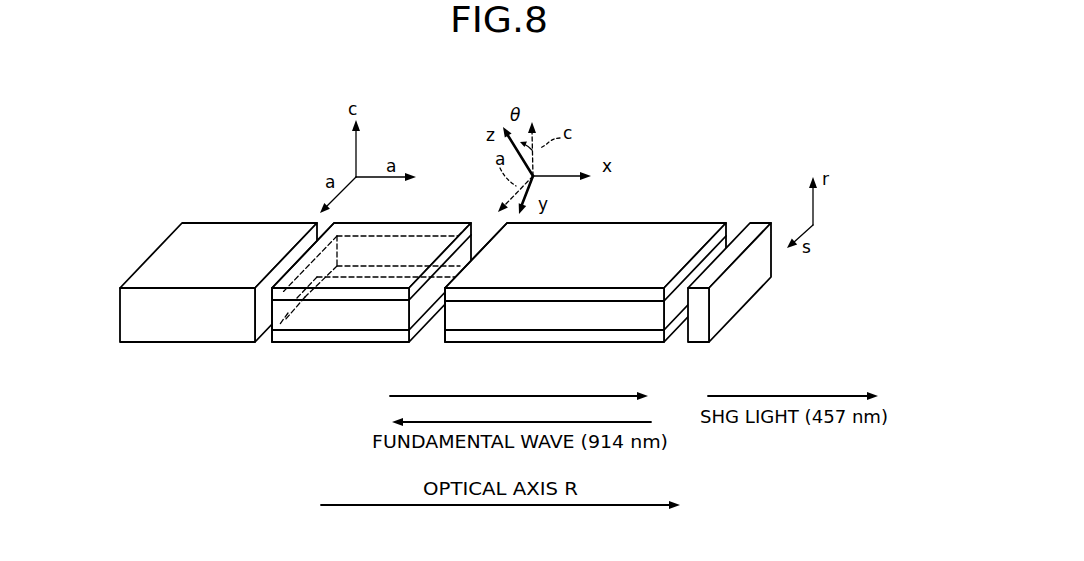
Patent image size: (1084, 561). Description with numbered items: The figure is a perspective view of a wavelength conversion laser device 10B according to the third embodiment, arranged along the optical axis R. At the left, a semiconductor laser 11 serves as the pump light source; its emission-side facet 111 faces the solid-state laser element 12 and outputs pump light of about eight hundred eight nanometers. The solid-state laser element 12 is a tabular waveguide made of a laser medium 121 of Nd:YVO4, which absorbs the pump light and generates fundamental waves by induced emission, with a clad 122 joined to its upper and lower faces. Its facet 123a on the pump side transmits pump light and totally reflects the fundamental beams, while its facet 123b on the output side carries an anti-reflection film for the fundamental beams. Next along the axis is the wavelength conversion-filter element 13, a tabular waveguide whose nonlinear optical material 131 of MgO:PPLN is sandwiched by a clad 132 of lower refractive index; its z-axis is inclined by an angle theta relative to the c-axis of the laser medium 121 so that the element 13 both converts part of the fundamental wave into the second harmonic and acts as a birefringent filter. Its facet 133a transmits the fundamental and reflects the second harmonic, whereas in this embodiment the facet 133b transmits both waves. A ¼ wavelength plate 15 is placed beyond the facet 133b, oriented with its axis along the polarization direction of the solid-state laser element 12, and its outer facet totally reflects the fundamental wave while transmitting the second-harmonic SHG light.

The wavelength conversion laser device 10B is at (740, 119).
The semiconductor laser 11 is at (218, 294).
The emission-side facet 111 is at (262, 308).
The solid-state laser element 12 is at (363, 276).
The laser medium 121 is at (285, 312).
The clad 122 is at (349, 295).
The facet 123a is at (318, 245).
The facet 123b is at (473, 257).
The wavelength conversion-filter element 13 is at (548, 289).
The nonlinear optical material 131 is at (485, 323).
The clad 132 is at (618, 293).
The facet 133a is at (443, 322).
The facet 133b is at (675, 317).
The ¼ wavelength plate 15 is at (757, 223).